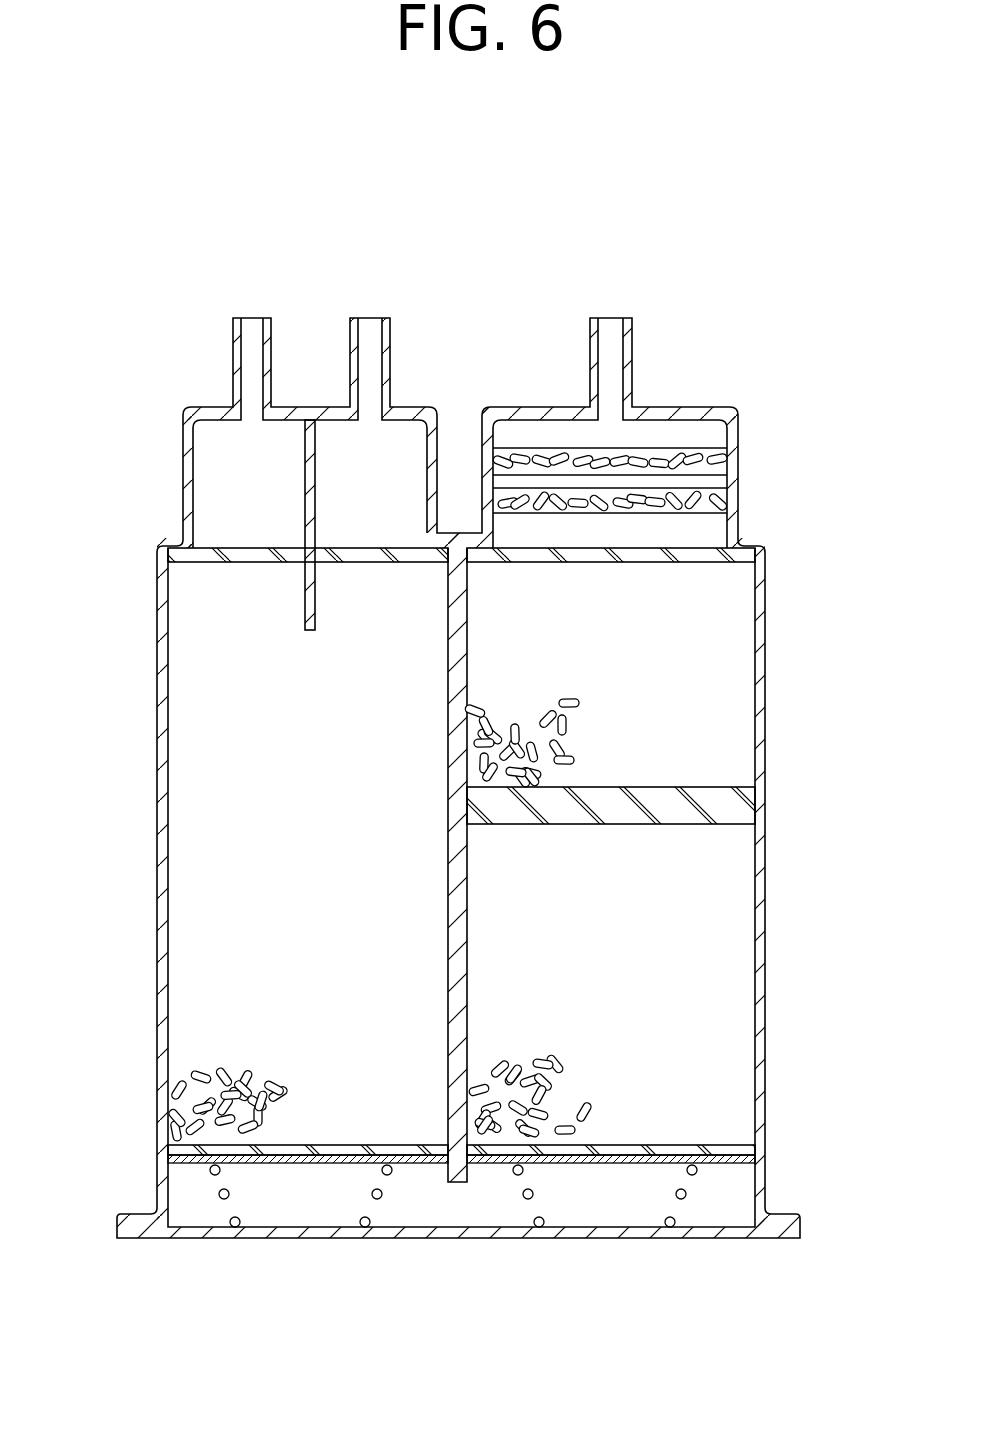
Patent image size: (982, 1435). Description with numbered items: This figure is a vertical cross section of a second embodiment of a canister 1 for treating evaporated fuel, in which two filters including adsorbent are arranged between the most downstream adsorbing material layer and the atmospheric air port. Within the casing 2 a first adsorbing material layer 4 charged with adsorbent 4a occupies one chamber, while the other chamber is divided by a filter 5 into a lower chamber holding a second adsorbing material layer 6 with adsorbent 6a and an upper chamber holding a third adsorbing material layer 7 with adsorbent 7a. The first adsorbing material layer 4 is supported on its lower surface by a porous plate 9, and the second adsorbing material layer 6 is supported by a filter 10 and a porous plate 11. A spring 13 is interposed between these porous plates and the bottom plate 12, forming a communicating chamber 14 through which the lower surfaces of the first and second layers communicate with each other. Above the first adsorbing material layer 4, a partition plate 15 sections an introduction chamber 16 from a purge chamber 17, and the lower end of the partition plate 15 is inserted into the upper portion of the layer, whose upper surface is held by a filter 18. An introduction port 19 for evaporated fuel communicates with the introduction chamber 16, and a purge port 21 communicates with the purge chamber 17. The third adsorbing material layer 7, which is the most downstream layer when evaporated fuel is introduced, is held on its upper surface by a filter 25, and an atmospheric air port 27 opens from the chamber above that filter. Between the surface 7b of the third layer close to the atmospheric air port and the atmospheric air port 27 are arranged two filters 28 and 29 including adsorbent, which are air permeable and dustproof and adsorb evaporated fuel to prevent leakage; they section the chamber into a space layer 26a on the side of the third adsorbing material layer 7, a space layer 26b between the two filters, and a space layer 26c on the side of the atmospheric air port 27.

The canister 1 is at (140, 810).
The casing 2 is at (160, 705).
The first adsorbing material layer 4 is at (183, 938).
The adsorbent 4a is at (173, 1107).
The filter 5 is at (708, 810).
The second adsorbing material layer 6 is at (723, 940).
The adsorbent 6a is at (545, 1082).
The third adsorbing material layer 7 is at (725, 693).
The adsorbent 7a is at (563, 752).
The surface close to the atmospheric air port 7b is at (568, 560).
The porous plate 9 is at (298, 1163).
The filter 10 is at (713, 1152).
The porous plate 11 is at (623, 1167).
The bottom plate 12 is at (395, 1240).
The spring 13 is at (218, 1198).
The communicating chamber 14 is at (508, 1215).
The partition plate 15 is at (305, 452).
The introduction chamber 16 is at (210, 482).
The purge chamber 17 is at (408, 437).
The filter 18 is at (362, 553).
The introduction port 19 is at (250, 328).
The purge port 21 is at (370, 328).
The filter 25 is at (708, 562).
The space layer 26a is at (708, 535).
The space layer 26b is at (720, 480).
The space layer 26c is at (670, 430).
The atmospheric air port 27 is at (607, 330).
The filter including adsorbent 28 is at (720, 502).
The filter including adsorbent 29 is at (720, 462).